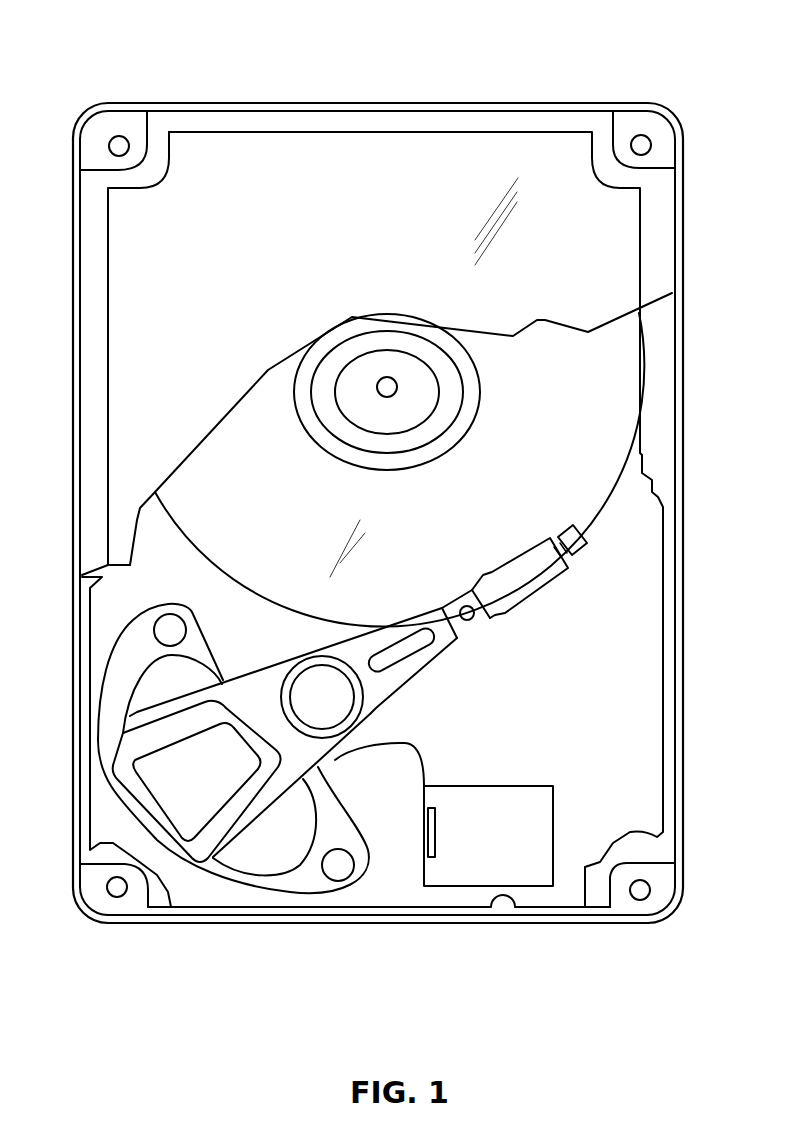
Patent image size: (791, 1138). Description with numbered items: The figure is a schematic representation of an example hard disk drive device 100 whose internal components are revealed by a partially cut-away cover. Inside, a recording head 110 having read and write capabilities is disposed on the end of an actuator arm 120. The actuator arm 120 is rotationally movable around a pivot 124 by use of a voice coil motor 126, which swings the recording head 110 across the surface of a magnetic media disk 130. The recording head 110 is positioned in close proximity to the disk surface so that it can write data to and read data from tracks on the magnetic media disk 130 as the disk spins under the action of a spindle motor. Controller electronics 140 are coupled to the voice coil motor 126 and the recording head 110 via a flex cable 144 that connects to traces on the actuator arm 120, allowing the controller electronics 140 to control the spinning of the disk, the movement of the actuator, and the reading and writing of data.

The hard disk drive device 100 is at (622, 58).
The recording head 110 is at (578, 550).
The actuator arm 120 is at (410, 682).
The pivot 124 is at (303, 663).
The voice coil motor 126 is at (205, 862).
The magnetic media disk 130 is at (252, 566).
The controller electronics 140 is at (533, 800).
The flex cable 144 is at (427, 753).